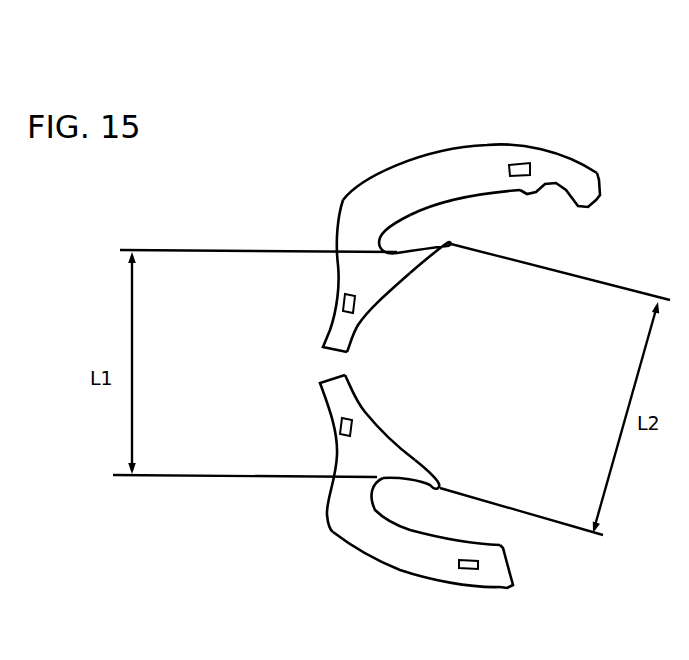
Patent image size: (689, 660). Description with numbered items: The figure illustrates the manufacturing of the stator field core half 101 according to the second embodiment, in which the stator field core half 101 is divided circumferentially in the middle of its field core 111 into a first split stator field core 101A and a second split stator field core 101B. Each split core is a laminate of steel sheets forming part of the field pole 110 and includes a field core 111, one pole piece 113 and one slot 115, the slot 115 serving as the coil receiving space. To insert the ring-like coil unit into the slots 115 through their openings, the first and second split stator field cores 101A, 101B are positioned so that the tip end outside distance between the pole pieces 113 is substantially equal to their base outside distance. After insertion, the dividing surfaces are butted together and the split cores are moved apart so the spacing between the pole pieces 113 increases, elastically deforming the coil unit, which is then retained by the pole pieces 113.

The stator field core half 101 is at (542, 137).
The first split stator field core 101A is at (376, 171).
The second split stator field core 101B is at (373, 560).
The field pole 110 is at (323, 336).
The field core 111 is at (352, 327).
The pole piece 113 is at (449, 248).
The slot 115 is at (408, 233).